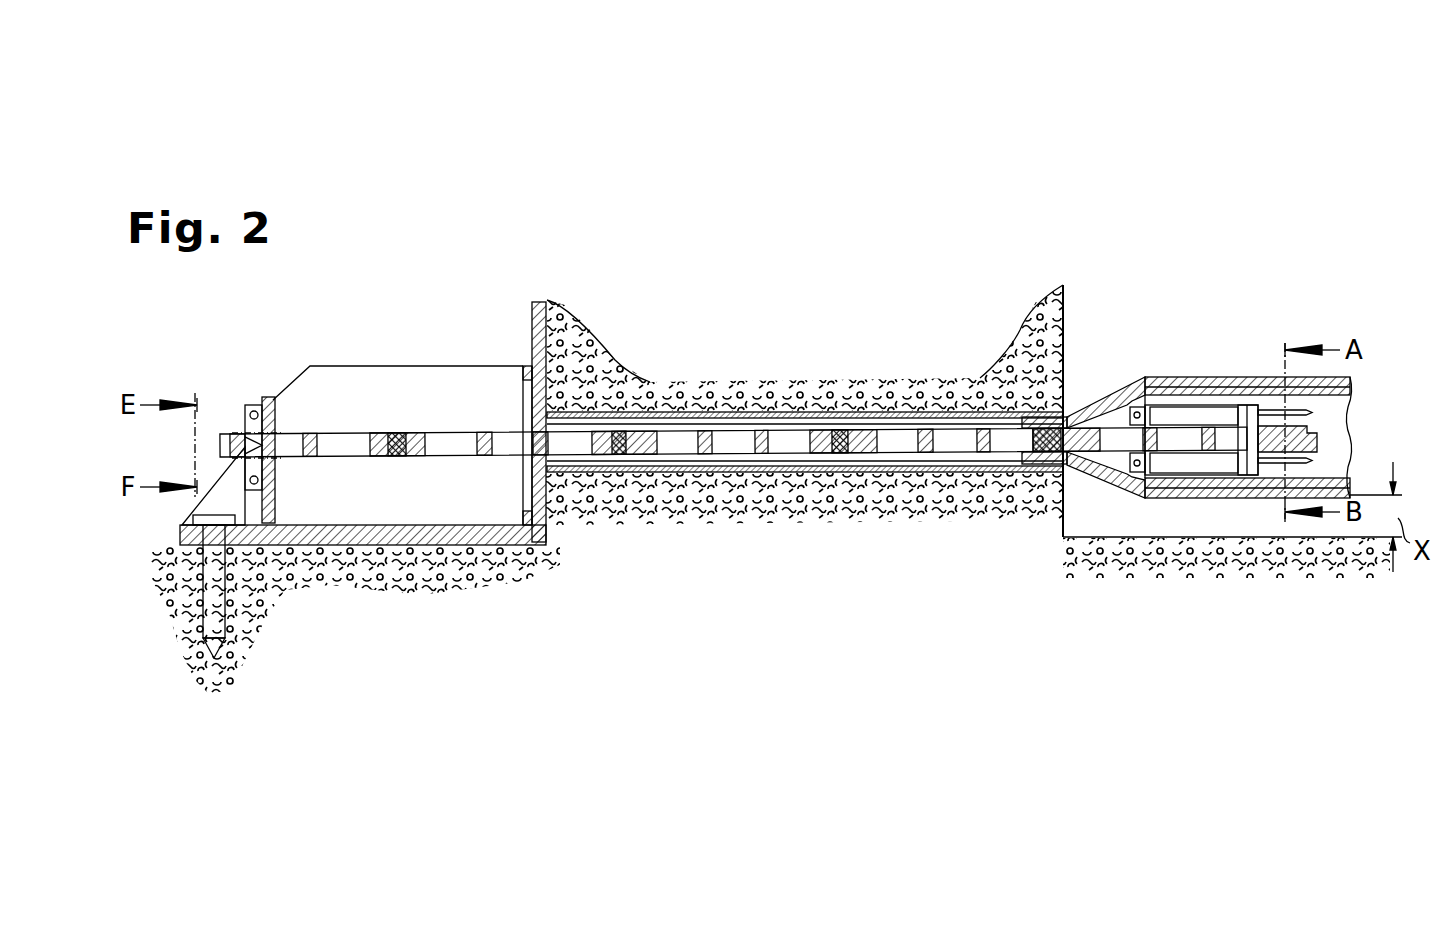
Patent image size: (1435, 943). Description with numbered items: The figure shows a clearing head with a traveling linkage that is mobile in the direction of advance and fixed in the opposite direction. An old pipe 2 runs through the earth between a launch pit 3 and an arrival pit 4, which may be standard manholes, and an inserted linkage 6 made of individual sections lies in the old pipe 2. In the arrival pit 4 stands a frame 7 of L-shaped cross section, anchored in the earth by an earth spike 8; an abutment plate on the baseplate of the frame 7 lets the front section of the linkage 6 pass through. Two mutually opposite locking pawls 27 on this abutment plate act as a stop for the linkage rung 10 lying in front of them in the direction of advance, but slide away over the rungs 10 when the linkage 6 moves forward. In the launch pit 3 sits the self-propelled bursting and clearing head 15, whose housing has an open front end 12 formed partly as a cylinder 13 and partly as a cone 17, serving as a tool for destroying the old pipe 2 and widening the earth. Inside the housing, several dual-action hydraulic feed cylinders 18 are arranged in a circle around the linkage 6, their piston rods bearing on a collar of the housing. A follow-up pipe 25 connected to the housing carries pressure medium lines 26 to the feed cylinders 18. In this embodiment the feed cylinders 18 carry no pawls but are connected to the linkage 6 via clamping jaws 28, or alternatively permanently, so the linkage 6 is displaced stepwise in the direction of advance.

The old pipe 2 is at (740, 410).
The launch pit 3 is at (1137, 330).
The arrival pit 4 is at (497, 335).
The linkage 6 is at (623, 433).
The frame 7 is at (538, 300).
The earth spike 8 is at (213, 618).
The rung 10 is at (214, 486).
The front end 12 is at (1032, 468).
The cylinder 13 is at (1032, 407).
The bursting and clearing head 15 is at (1137, 497).
The cone 17 is at (1085, 420).
The hydraulic feed cylinders 18 is at (1185, 460).
The follow-up pipe 25 is at (1320, 378).
The pressure medium lines 26 is at (1312, 412).
The locking pawls 27 is at (252, 429).
The clamping jaws 28 is at (1252, 475).